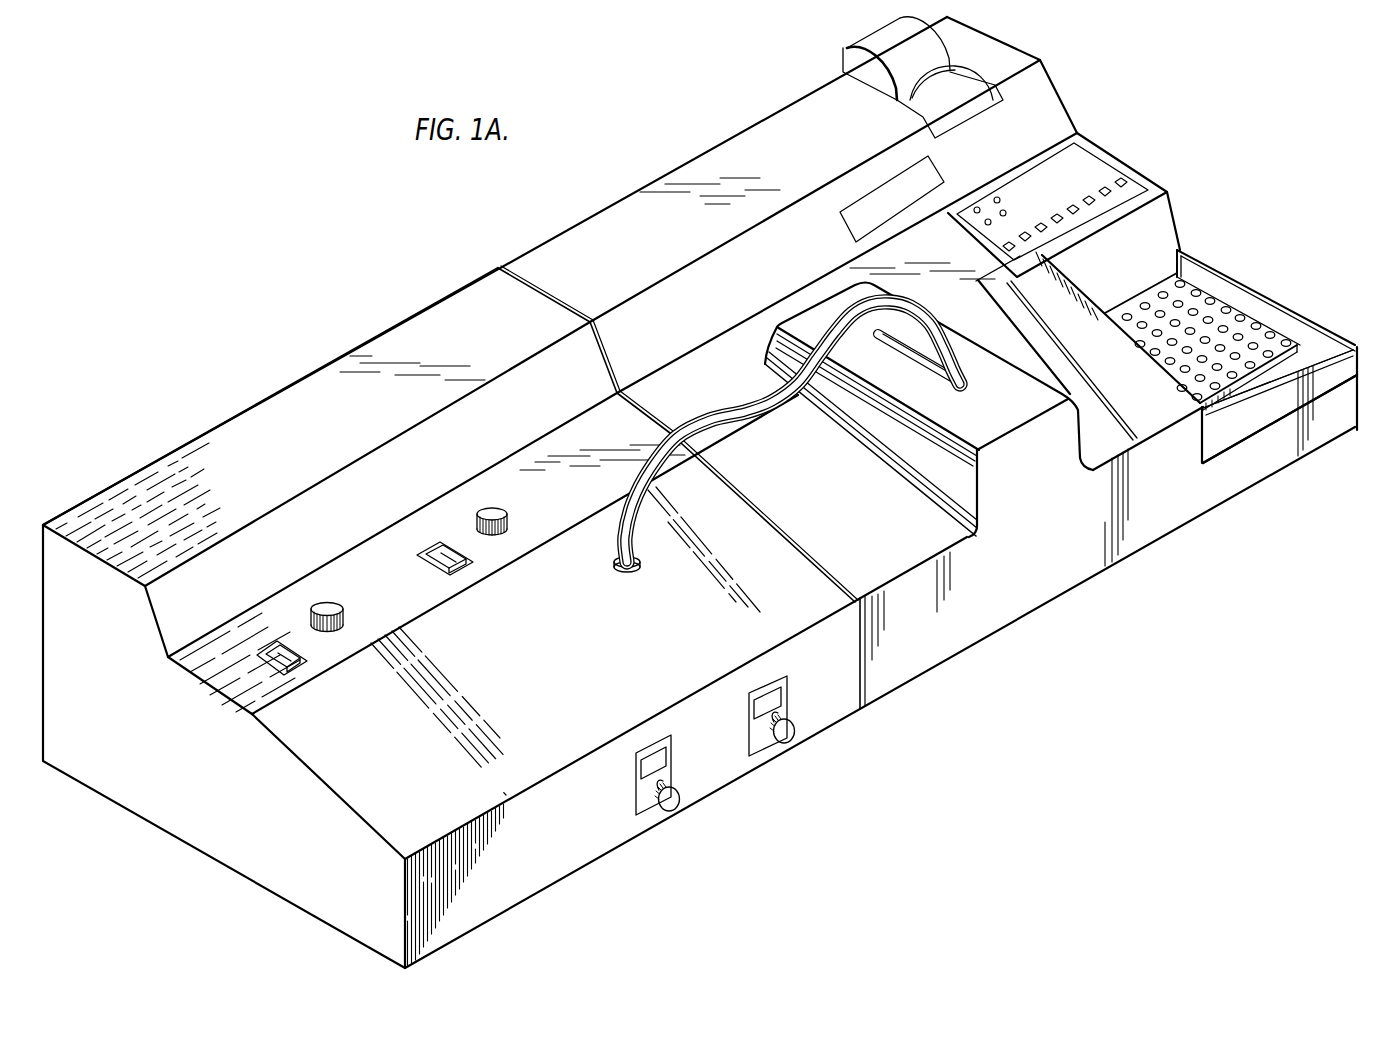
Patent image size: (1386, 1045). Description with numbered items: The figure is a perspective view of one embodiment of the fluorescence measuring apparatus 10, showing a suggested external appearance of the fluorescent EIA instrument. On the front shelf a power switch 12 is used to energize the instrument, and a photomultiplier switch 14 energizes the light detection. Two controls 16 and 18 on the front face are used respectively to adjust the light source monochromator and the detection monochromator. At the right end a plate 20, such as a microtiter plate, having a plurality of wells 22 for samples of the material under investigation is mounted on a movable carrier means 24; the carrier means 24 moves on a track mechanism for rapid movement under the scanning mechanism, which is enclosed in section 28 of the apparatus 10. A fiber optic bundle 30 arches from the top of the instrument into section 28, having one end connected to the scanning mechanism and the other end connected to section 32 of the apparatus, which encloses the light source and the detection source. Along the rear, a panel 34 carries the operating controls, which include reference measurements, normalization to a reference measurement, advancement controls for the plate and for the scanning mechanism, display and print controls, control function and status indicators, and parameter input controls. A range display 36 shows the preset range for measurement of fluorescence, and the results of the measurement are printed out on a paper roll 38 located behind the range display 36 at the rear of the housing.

The fluorescence measuring apparatus 10 is at (232, 386).
The power switch 12 is at (289, 684).
The photomultiplier switch 14 is at (448, 595).
The light source monochromator control 16 is at (650, 816).
The detection monochromator control 18 is at (769, 755).
The plate 20 is at (1195, 280).
The wells 22 is at (1205, 313).
The movable carrier means 24 is at (1246, 390).
The section enclosing the scanning mechanism 28 is at (1014, 508).
The fiber optic bundle 30 is at (751, 416).
The section enclosing the light source and detection source 32 is at (384, 330).
The panel 34 is at (1083, 163).
The range display 36 is at (933, 270).
The paper roll 38 is at (843, 50).